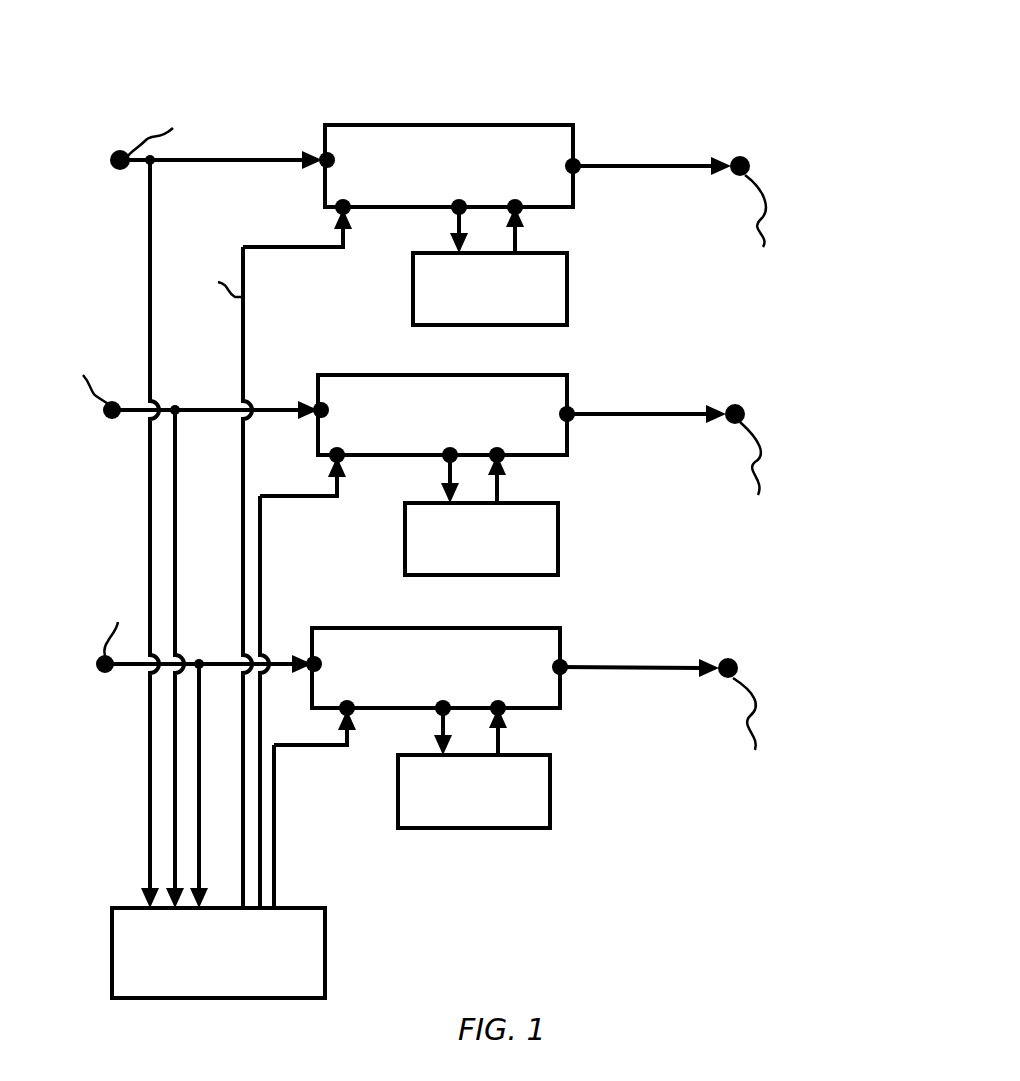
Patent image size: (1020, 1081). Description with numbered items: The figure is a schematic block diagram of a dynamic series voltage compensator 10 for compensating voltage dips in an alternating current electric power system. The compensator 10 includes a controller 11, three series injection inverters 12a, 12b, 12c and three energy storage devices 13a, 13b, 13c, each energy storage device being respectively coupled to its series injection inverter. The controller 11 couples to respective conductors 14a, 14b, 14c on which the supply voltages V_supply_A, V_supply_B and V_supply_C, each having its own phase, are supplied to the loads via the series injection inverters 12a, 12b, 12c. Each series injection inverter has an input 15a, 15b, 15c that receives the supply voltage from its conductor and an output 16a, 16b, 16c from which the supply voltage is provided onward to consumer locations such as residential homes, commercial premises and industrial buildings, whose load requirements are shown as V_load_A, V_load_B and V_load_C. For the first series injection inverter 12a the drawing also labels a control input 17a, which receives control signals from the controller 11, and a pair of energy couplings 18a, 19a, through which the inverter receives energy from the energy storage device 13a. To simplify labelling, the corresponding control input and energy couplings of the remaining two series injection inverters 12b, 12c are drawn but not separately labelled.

The dynamic series voltage compensator 10 is at (722, 60).
The controller 11 is at (325, 928).
The series injection inverter 12a is at (575, 204).
The series injection inverter 12b is at (570, 455).
The series injection inverter 12c is at (562, 698).
The energy storage device 13a is at (412, 277).
The energy storage device 13b is at (405, 542).
The energy storage device 13c is at (475, 828).
The conductor 14a is at (210, 162).
The conductor 14b is at (190, 405).
The conductor 14c is at (199, 660).
The input 15a is at (326, 157).
The input 15b is at (320, 409).
The input 15c is at (313, 662).
The output 16a is at (576, 163).
The output 16b is at (569, 413).
The output 16c is at (575, 668).
The control input 17a is at (340, 207).
The energy coupling 18a is at (459, 202).
The energy coupling 19a is at (516, 202).